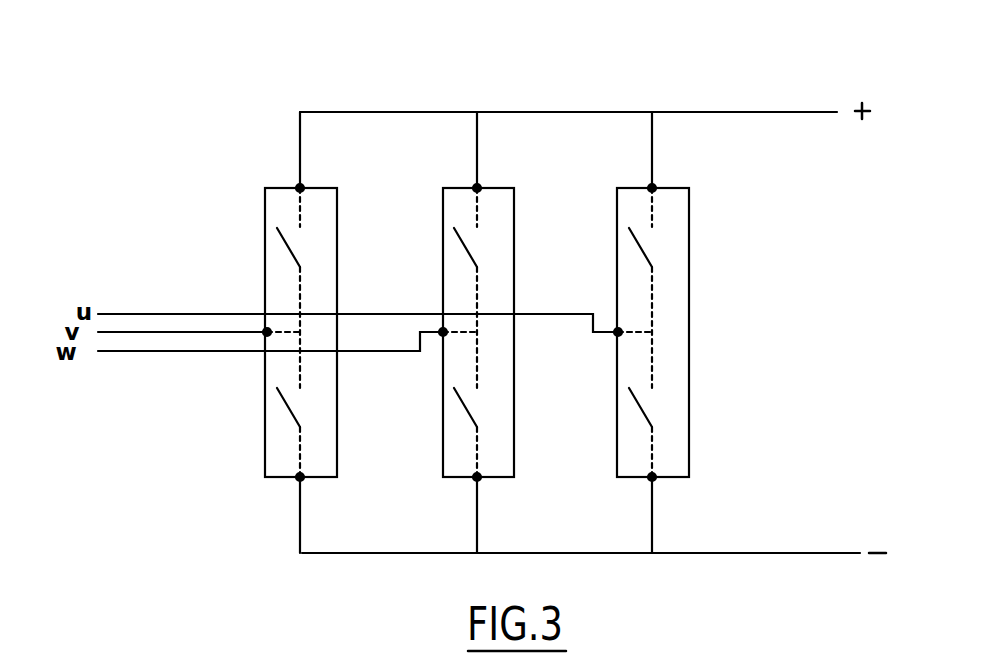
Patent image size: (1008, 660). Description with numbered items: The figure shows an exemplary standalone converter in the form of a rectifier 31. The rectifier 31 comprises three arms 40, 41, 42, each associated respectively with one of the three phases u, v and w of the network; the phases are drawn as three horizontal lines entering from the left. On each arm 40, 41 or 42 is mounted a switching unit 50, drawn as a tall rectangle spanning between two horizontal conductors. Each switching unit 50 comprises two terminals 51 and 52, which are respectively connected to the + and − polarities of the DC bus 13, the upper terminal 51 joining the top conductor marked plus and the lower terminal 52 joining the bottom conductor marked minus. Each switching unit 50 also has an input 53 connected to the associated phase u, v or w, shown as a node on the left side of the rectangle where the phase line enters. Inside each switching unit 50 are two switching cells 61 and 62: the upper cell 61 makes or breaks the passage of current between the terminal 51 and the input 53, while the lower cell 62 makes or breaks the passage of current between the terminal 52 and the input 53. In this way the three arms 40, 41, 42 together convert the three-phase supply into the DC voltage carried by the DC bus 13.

The rectifier 31 is at (322, 76).
The DC bus 13 is at (770, 112).
The arm 40 is at (298, 142).
The arm 41 is at (476, 150).
The arm 42 is at (651, 138).
The switching unit 50 is at (267, 377).
The terminal 51 is at (298, 188).
The terminal 52 is at (302, 477).
The input 53 is at (267, 332).
The switching cell 61 is at (287, 247).
The switching cell 62 is at (285, 425).